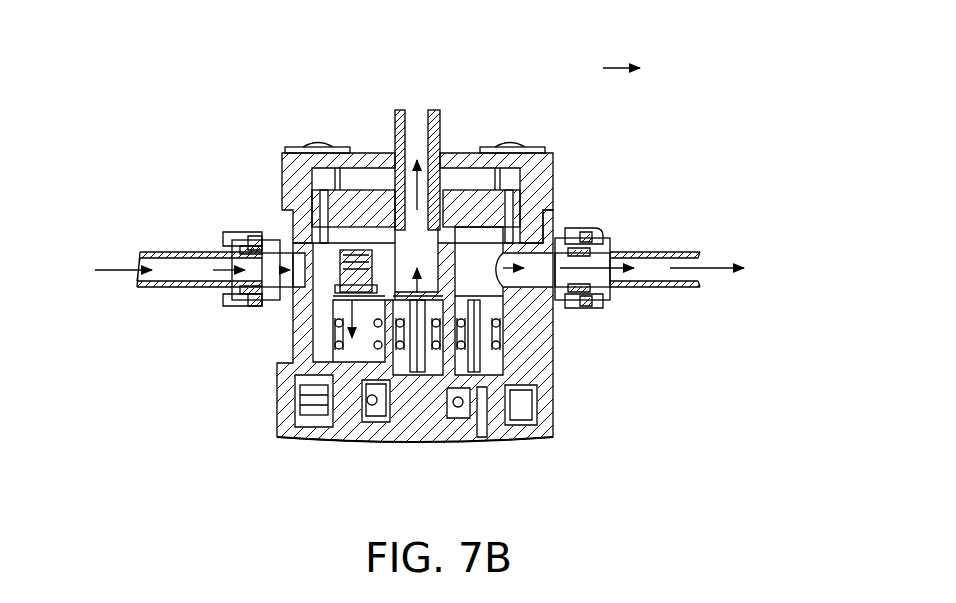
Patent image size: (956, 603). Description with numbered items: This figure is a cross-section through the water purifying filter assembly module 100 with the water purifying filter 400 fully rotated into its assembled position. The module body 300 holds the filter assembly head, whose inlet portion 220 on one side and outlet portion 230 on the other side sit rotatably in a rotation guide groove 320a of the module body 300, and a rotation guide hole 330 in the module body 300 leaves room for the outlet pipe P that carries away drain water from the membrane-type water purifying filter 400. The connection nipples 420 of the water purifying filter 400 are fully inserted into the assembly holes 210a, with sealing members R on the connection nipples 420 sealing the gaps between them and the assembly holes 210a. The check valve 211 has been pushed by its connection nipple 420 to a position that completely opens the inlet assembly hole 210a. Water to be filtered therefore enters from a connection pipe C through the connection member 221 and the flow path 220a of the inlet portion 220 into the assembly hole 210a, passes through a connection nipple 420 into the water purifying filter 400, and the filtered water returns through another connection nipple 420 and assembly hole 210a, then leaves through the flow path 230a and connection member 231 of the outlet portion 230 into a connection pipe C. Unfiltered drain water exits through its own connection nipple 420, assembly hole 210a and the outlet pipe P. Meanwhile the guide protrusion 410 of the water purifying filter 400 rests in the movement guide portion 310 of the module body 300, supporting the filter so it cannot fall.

The water purifying filter assembly module 100 is at (150, 95).
The module body 300 is at (312, 122).
The rotation guide hole 330 is at (440, 150).
The outlet pipe P is at (383, 115).
The assembly hole 210a is at (560, 358).
The check valve 211 is at (320, 318).
The sealing member R is at (293, 292).
The movement guide portion 310 is at (277, 410).
The guide protrusion 410 is at (305, 432).
The connection nipple 420 is at (540, 352).
The water purifying filter 400 is at (572, 418).
The rotation guide groove 320a is at (553, 237).
The inlet portion 220 is at (262, 220).
The flow path 220a is at (250, 228).
The connection member 221 is at (262, 306).
The outlet portion 230 is at (592, 320).
The connection member 231 is at (600, 232).
The flow path 230a is at (612, 245).
The connection pipe C is at (177, 252).